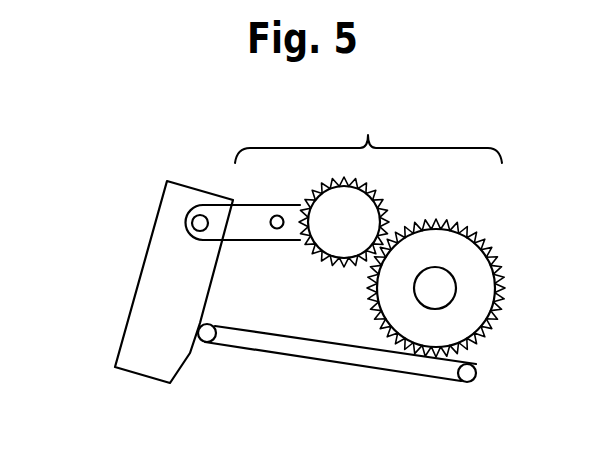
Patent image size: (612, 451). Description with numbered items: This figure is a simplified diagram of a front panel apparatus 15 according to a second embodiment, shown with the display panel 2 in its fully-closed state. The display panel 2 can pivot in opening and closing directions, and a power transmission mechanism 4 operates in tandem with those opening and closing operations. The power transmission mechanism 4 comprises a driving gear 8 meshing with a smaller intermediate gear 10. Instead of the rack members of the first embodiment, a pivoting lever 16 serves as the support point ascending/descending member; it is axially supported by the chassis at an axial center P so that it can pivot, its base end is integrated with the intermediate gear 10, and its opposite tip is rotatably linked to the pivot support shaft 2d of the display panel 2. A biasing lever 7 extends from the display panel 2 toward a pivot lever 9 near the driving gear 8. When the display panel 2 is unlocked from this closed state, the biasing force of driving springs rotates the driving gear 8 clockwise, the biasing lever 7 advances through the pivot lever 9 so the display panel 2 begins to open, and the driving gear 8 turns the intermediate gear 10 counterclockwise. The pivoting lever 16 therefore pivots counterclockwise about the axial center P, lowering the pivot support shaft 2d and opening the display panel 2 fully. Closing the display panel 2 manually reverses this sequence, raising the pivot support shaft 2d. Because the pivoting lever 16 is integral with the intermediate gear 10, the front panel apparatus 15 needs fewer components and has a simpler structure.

The front panel apparatus 15 is at (138, 170).
The display panel 2 is at (180, 193).
The pivot support shaft 2d is at (192, 223).
The pivoting lever 16 is at (247, 241).
The axial center P is at (278, 215).
The power transmission mechanism 4 is at (375, 131).
The intermediate gear 10 is at (365, 207).
The driving gear 8 is at (482, 268).
The pivot lever 9 is at (463, 355).
The biasing lever 7 is at (287, 349).